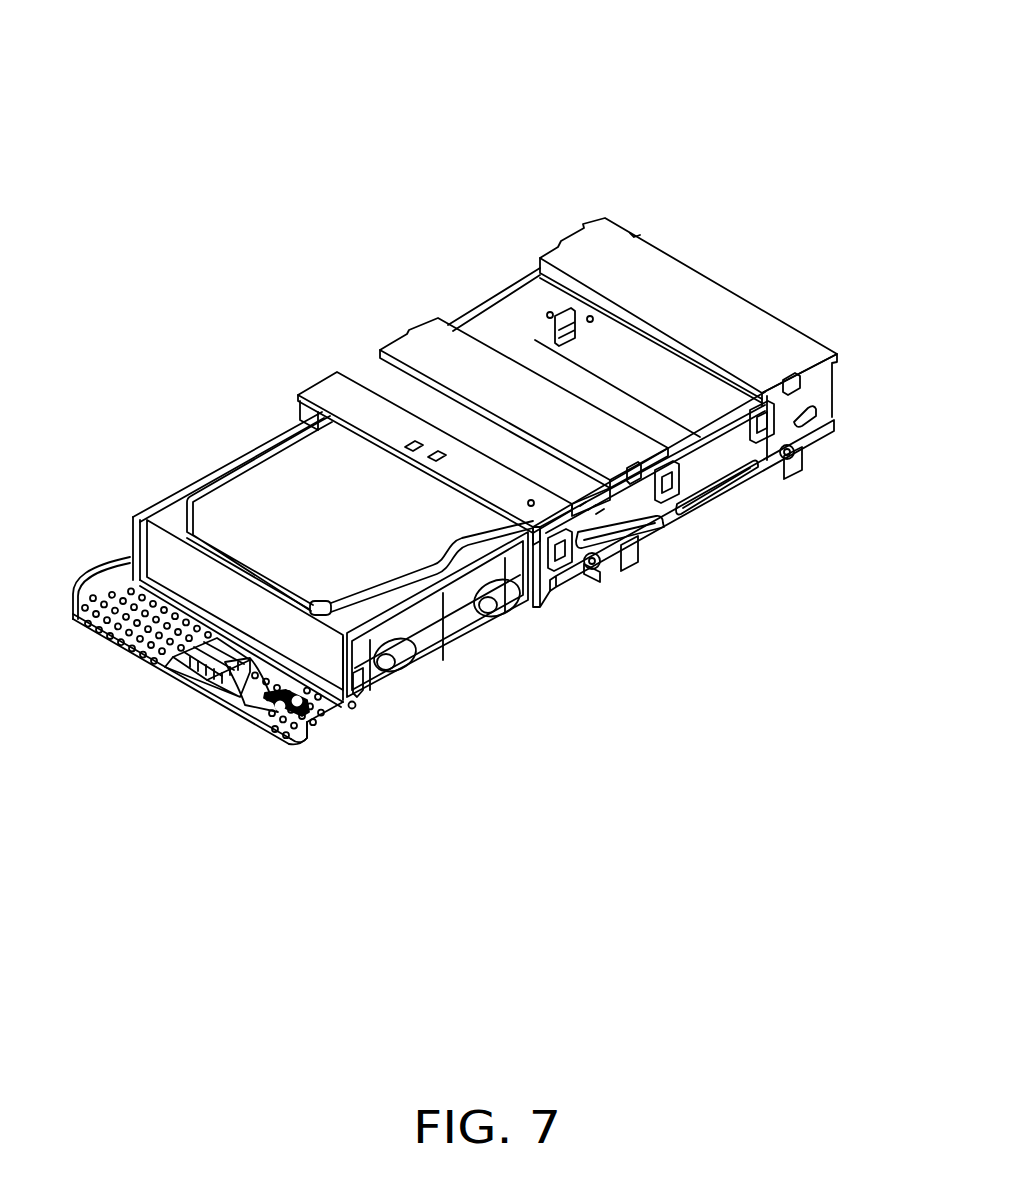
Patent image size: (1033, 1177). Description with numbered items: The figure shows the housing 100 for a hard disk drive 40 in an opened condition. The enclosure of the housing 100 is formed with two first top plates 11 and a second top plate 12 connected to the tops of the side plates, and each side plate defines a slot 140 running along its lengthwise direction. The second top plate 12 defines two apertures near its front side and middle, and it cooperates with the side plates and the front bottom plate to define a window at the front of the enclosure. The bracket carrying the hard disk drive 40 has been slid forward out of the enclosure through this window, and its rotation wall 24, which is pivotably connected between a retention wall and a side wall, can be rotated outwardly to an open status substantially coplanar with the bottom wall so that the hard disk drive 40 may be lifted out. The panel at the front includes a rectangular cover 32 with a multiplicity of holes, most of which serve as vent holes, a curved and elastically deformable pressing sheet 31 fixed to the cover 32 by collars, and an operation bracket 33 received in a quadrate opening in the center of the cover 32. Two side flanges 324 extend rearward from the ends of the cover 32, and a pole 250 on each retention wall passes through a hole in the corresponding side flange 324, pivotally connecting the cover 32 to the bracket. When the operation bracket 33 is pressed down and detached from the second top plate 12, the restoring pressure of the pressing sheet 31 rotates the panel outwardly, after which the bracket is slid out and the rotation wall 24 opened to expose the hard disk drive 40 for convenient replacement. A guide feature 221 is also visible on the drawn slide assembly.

The housing 100 is at (439, 53).
The first top plate 11 is at (534, 381).
The second top plate 12 is at (330, 398).
The hard disk drive 40 is at (252, 492).
The slot 140 is at (802, 418).
The sliding slot 221 is at (628, 528).
The cover 32 is at (137, 633).
The operation bracket 33 is at (182, 672).
The pressing sheet 31 is at (252, 692).
The rotation wall 24 is at (430, 648).
The pole 250 is at (353, 710).
The side flange 324 is at (299, 732).